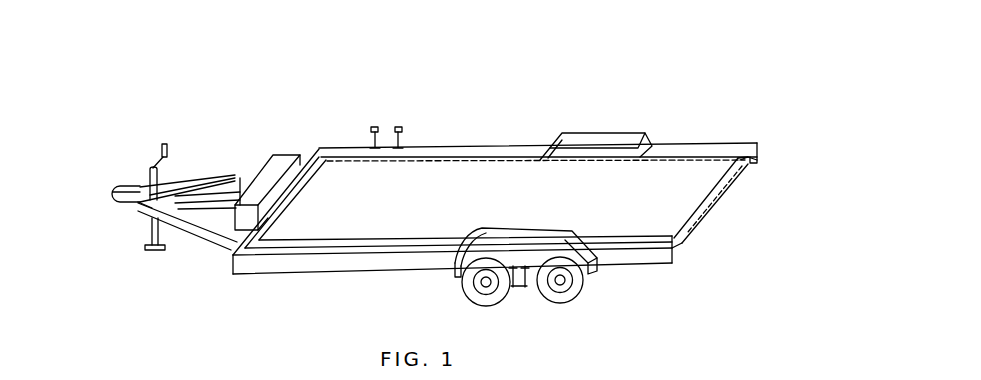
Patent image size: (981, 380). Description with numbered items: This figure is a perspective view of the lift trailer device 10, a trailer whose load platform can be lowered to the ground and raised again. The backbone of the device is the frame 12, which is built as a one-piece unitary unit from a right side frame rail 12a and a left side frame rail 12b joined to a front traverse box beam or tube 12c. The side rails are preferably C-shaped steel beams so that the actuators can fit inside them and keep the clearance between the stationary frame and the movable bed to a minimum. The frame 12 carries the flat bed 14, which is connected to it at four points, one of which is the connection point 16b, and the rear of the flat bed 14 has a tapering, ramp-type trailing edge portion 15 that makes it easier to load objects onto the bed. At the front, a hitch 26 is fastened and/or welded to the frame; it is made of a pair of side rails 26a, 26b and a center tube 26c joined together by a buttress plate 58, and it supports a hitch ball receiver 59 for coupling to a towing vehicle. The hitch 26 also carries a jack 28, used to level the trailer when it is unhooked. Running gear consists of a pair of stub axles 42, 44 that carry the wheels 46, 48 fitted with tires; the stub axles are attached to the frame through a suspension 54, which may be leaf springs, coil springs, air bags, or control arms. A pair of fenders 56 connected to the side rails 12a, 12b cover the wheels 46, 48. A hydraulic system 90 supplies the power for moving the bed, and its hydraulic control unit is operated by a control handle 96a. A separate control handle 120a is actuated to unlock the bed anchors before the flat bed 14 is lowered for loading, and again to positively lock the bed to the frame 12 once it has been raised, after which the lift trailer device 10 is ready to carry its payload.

The lift trailer device 10 is at (168, 48).
The frame 12 is at (312, 277).
The right side frame rail 12a is at (694, 146).
The left side frame rail 12b is at (340, 266).
The front traverse box beam 12c is at (319, 155).
The flat bed 14 is at (712, 210).
The trailing edge portion 15 is at (727, 170).
The connection point 16b is at (682, 373).
The hitch 26 is at (208, 244).
The hitch side rail 26a is at (220, 241).
The hitch side rail 26b is at (226, 178).
The center tube 26c is at (189, 194).
The jack 28 is at (145, 178).
The stub axle 42 is at (482, 282).
The stub axle 44 is at (557, 283).
The wheel 46 is at (478, 292).
The wheel 48 is at (482, 298).
The suspension 54 is at (518, 290).
The fenders 56 is at (582, 137).
The buttress plate 58 is at (137, 202).
The hitch ball receiver 59 is at (113, 192).
The hydraulic system 90 is at (272, 168).
The control handle 96a is at (402, 130).
The control handle 120a is at (371, 130).